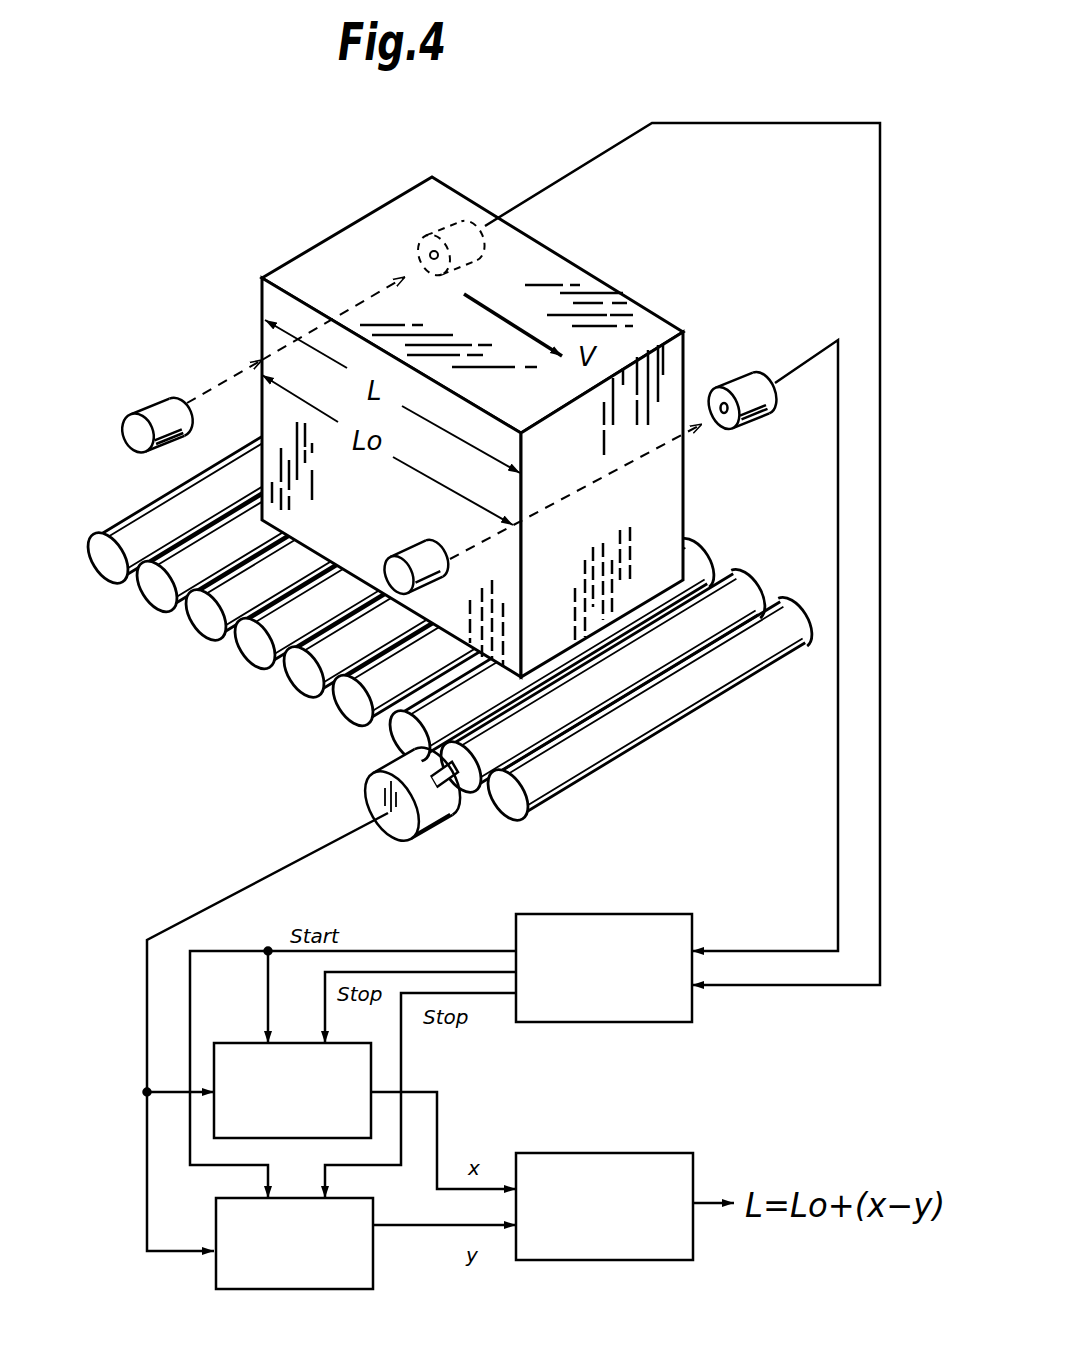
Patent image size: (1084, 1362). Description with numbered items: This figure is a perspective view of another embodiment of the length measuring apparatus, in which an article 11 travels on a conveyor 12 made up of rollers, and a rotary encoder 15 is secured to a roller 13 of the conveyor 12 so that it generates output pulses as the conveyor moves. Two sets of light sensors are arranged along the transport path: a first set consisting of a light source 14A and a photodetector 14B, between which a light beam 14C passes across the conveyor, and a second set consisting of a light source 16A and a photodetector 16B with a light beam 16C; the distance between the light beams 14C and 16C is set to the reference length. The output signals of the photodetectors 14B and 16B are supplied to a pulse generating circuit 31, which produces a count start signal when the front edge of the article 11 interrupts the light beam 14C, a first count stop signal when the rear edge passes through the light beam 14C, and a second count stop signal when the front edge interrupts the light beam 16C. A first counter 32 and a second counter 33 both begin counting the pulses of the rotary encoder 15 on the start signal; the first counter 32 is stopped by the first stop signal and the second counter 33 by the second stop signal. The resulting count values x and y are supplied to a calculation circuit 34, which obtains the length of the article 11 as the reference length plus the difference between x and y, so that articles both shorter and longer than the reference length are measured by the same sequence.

The article 11 is at (573, 268).
The conveyor 12 is at (660, 708).
The roller 13 is at (380, 686).
The light source 14A is at (152, 415).
The photodetector 14B is at (468, 233).
The light beam 14C is at (218, 390).
The rotary encoder 15 is at (375, 779).
The light source 16A is at (417, 547).
The photodetector 16B is at (766, 394).
The light beam 16C is at (623, 468).
The pulse generating circuit 31 is at (615, 926).
The first counter 32 is at (245, 1055).
The second counter 33 is at (363, 1260).
The calculation circuit 34 is at (607, 1166).